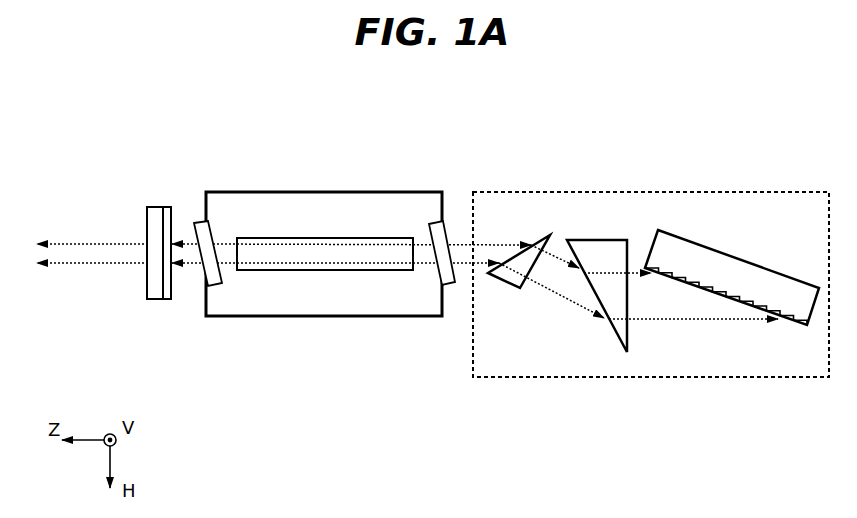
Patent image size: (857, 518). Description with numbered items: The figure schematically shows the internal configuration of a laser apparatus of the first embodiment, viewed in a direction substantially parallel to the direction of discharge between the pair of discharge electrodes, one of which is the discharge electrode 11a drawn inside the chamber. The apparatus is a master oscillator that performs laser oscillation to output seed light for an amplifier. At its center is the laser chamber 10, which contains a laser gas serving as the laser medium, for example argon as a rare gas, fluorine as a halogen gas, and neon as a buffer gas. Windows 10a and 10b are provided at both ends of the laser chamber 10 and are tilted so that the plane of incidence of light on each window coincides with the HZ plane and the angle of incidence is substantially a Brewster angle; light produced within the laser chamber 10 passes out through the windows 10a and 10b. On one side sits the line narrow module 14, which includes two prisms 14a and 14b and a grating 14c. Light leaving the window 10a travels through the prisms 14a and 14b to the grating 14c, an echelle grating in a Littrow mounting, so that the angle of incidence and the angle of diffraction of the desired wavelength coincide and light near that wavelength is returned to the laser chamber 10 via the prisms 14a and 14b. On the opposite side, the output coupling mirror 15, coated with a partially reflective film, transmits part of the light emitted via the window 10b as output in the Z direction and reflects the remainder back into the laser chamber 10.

The laser chamber 10 is at (307, 317).
The window 10a is at (429, 231).
The window 10b is at (220, 278).
The discharge electrode 11a is at (307, 270).
The line narrow module 14 is at (525, 191).
The prism 14a is at (549, 237).
The prism 14b is at (628, 330).
The grating 14c is at (758, 262).
The output coupling mirror 15 is at (148, 302).